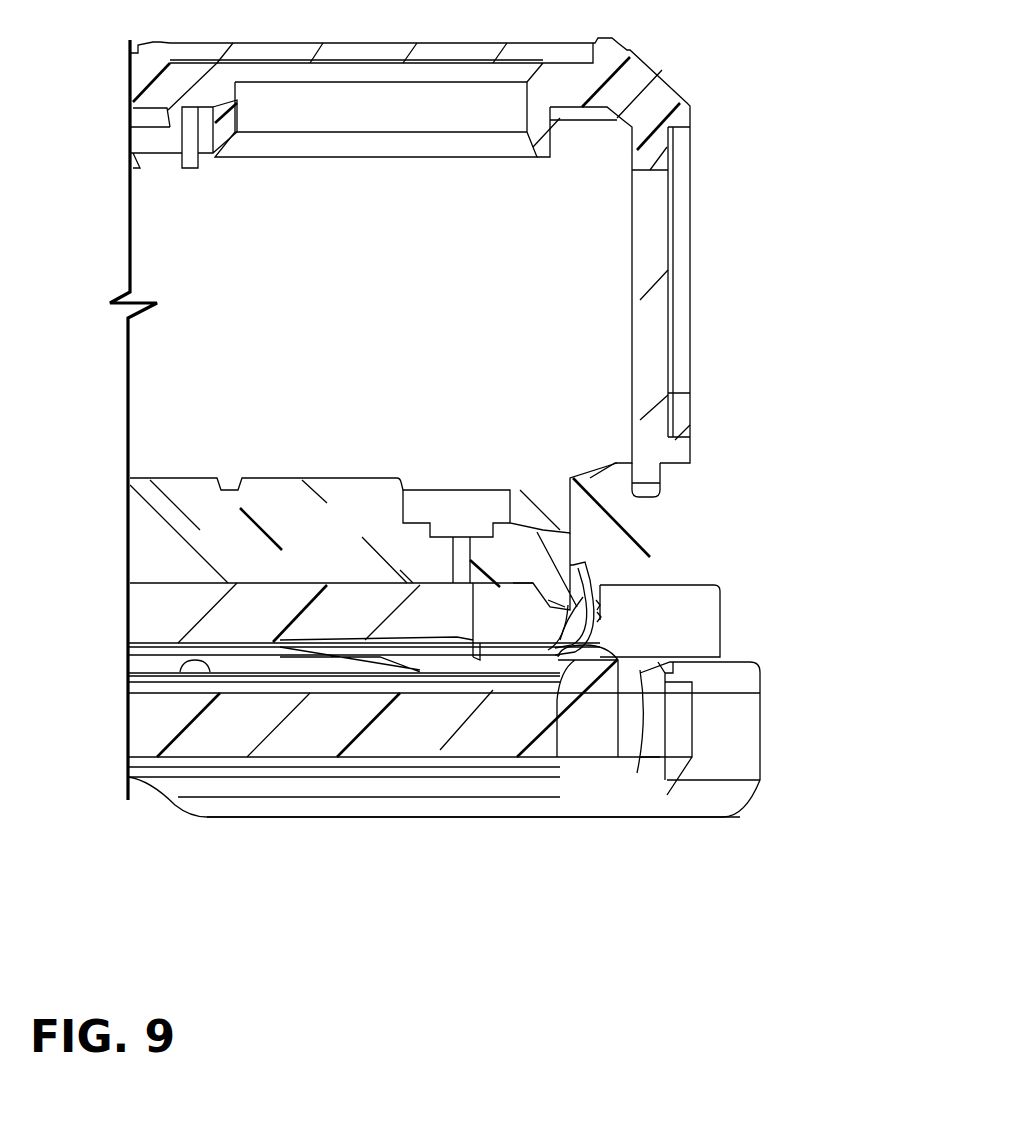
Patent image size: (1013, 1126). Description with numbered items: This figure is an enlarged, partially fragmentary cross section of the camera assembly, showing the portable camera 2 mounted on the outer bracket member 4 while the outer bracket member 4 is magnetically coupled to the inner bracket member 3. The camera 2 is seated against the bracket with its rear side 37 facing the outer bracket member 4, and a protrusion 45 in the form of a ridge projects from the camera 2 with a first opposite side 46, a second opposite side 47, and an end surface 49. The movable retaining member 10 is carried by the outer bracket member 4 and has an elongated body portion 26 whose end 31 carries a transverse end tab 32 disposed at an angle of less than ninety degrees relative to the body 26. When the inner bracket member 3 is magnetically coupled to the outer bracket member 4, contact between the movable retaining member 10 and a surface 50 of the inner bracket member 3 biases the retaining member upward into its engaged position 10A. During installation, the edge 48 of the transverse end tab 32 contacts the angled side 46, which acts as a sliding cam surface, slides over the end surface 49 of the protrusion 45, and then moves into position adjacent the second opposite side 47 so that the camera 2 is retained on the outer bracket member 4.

The portable camera 2 is at (664, 78).
The inner bracket member 3 is at (765, 738).
The outer bracket member 4 is at (722, 637).
The movable retaining member 10 is at (599, 617).
The engaged position 10A is at (601, 607).
The elongated body portion 26 is at (437, 660).
The end 31 is at (592, 585).
The transverse end tab 32 is at (597, 597).
The rear side 37 is at (130, 626).
The protrusion 45 is at (513, 585).
The first opposite side 46 is at (480, 660).
The second opposite side 47 is at (583, 597).
The edge 48 is at (587, 574).
The end surface 49 is at (548, 600).
The surface 50 is at (607, 647).